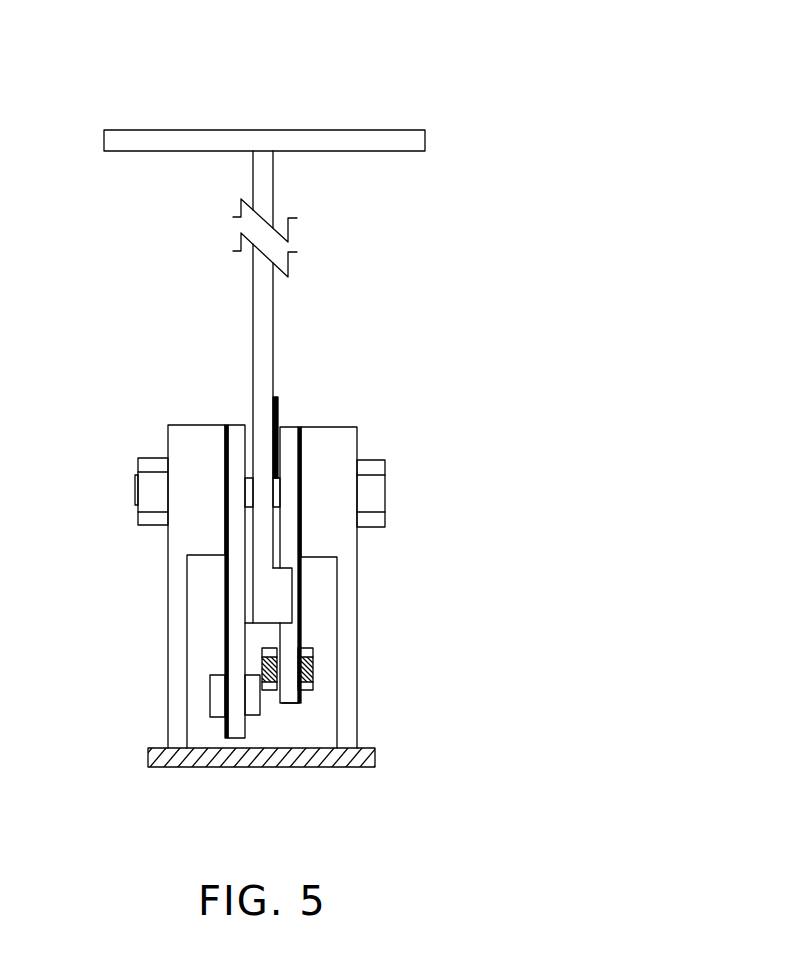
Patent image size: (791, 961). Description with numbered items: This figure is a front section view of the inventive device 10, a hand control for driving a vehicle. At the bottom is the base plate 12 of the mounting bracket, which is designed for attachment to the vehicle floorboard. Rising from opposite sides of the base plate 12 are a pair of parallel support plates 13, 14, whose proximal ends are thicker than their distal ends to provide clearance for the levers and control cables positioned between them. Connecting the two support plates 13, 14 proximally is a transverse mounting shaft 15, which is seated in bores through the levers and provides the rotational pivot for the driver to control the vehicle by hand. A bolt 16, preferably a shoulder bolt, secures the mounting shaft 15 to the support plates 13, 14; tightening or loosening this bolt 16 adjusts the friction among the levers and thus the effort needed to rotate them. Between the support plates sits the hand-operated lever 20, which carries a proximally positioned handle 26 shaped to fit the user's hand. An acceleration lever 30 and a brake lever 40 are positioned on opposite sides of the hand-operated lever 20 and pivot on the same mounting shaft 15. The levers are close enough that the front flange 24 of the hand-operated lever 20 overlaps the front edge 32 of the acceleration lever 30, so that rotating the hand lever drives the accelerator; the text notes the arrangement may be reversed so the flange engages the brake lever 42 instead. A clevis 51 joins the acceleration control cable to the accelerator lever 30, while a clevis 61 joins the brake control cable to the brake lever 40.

The inventive device 10 is at (381, 56).
The base plate 12 is at (341, 760).
The support plate 13 is at (335, 540).
The support plate 14 is at (182, 528).
The transverse mounting shaft 15 is at (275, 405).
The bolt 16 is at (152, 495).
The hand-operated lever 20 is at (272, 352).
The front flange 24 is at (272, 599).
The handle 26 is at (302, 142).
The acceleration lever 30 is at (319, 437).
The front edge 32 is at (288, 696).
The brake lever 40 is at (237, 433).
The brake lever 42 is at (233, 642).
The clevis 51 is at (313, 687).
The clevis 61 is at (215, 692).